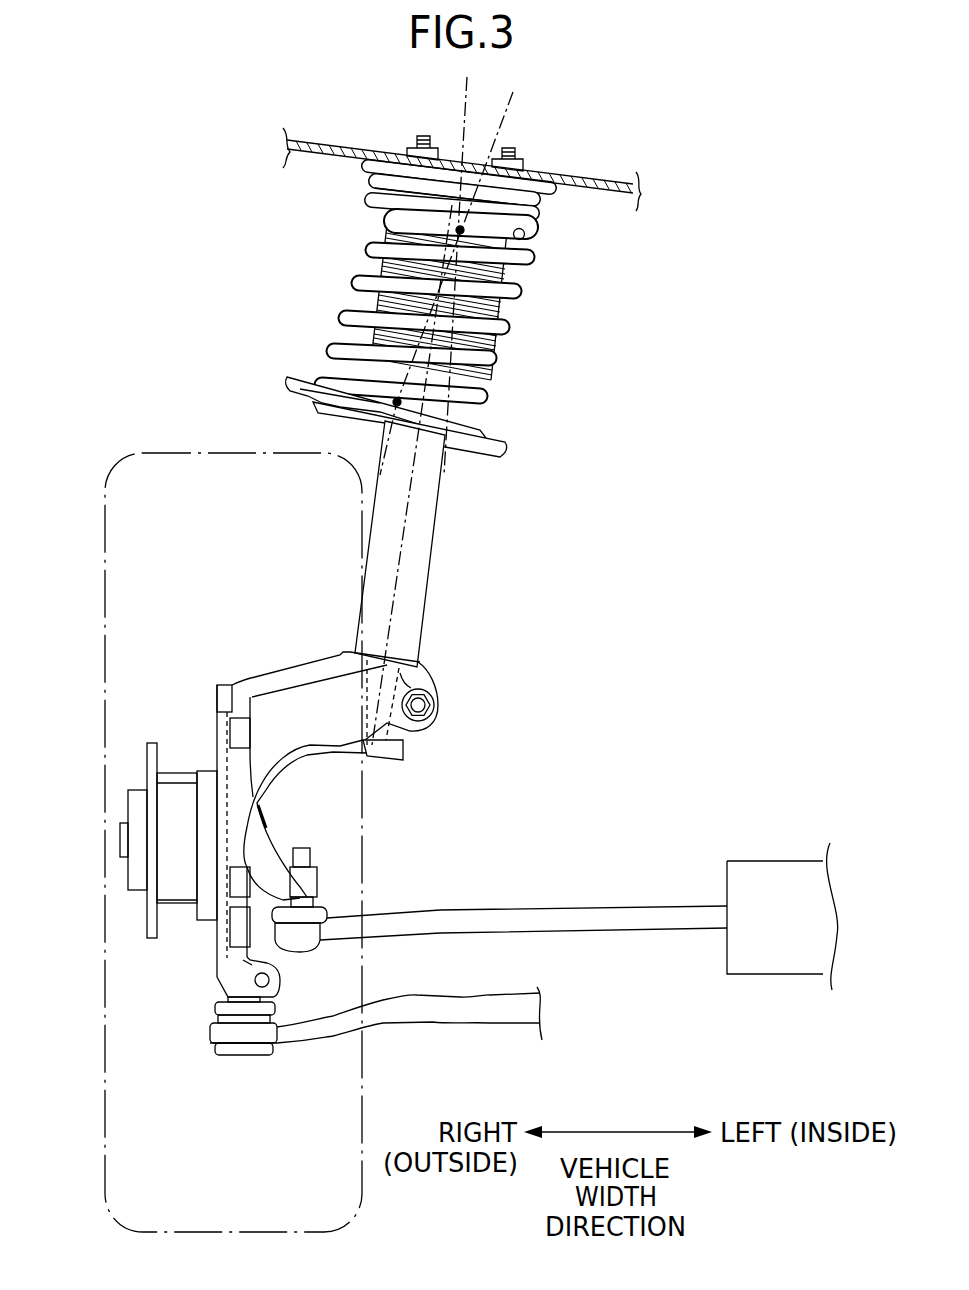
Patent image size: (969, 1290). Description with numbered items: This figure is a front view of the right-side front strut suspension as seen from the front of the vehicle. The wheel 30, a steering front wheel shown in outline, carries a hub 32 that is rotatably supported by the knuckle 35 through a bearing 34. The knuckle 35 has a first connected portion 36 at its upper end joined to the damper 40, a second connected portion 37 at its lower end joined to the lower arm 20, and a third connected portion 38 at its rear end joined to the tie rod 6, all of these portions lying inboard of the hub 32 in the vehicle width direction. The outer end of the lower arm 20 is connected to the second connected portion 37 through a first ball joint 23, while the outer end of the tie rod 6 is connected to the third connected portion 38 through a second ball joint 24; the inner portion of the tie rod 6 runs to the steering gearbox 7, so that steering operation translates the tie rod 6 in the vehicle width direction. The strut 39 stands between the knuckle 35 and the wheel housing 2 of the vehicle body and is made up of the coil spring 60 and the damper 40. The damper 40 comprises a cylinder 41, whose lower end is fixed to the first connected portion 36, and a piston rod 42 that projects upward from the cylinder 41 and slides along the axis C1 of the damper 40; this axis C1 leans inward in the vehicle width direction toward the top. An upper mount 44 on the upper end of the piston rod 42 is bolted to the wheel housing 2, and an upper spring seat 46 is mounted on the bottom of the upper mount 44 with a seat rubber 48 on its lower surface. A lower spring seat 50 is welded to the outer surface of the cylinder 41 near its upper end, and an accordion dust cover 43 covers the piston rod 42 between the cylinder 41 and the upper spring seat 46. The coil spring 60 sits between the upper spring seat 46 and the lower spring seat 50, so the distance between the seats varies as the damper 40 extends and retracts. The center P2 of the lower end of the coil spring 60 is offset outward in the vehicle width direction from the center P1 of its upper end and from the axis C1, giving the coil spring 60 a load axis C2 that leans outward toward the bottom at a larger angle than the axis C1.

The wheel housing 2 is at (577, 178).
The tie rod 6 is at (470, 910).
The steering gearbox 7 is at (780, 860).
The lower arm 20 is at (478, 1025).
The first ball joint 23 is at (248, 1057).
The second ball joint 24 is at (300, 945).
The wheel 30 is at (105, 667).
The hub 32 is at (147, 910).
The bearing 34 is at (180, 783).
The knuckle 35 is at (258, 672).
The first connected portion 36 is at (390, 724).
The second connected portion 37 is at (217, 978).
The third connected portion 38 is at (313, 873).
The strut 39 is at (578, 326).
The damper 40 is at (410, 573).
The cylinder 41 is at (440, 508).
The piston rod 42 is at (485, 328).
The dust cover 43 is at (380, 308).
The upper mount 44 is at (537, 187).
The upper spring seat 46 is at (370, 175).
The seat rubber 48 is at (363, 200).
The lower spring seat 50 is at (295, 390).
The coil spring 60 is at (520, 290).
The axis of the damper C1 is at (463, 94).
The load axis of the coil spring C2 is at (510, 107).
The center of the upper end portion of the coil spring P1 is at (537, 222).
The center of the lower end portion of the coil spring P2 is at (350, 370).